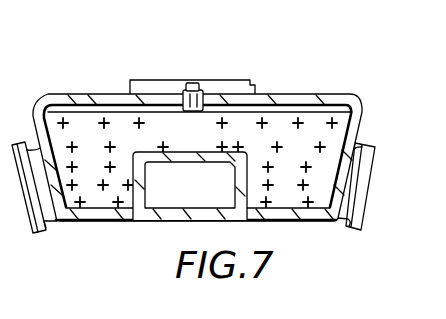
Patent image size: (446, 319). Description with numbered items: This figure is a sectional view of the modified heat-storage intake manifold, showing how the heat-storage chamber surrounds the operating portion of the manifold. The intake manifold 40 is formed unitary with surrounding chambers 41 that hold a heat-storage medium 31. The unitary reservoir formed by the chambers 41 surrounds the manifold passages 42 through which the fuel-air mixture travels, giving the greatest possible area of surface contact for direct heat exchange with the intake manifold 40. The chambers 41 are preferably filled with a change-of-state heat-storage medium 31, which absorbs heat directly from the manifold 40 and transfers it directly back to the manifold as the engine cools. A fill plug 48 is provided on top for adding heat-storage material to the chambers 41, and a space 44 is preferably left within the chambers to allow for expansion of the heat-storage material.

The intake manifold 40 is at (280, 75).
The chambers 41 is at (78, 118).
The space 44 is at (113, 117).
The heat-storage medium 31 is at (192, 136).
The manifold passages 42 is at (204, 193).
The fill plug 48 is at (185, 83).